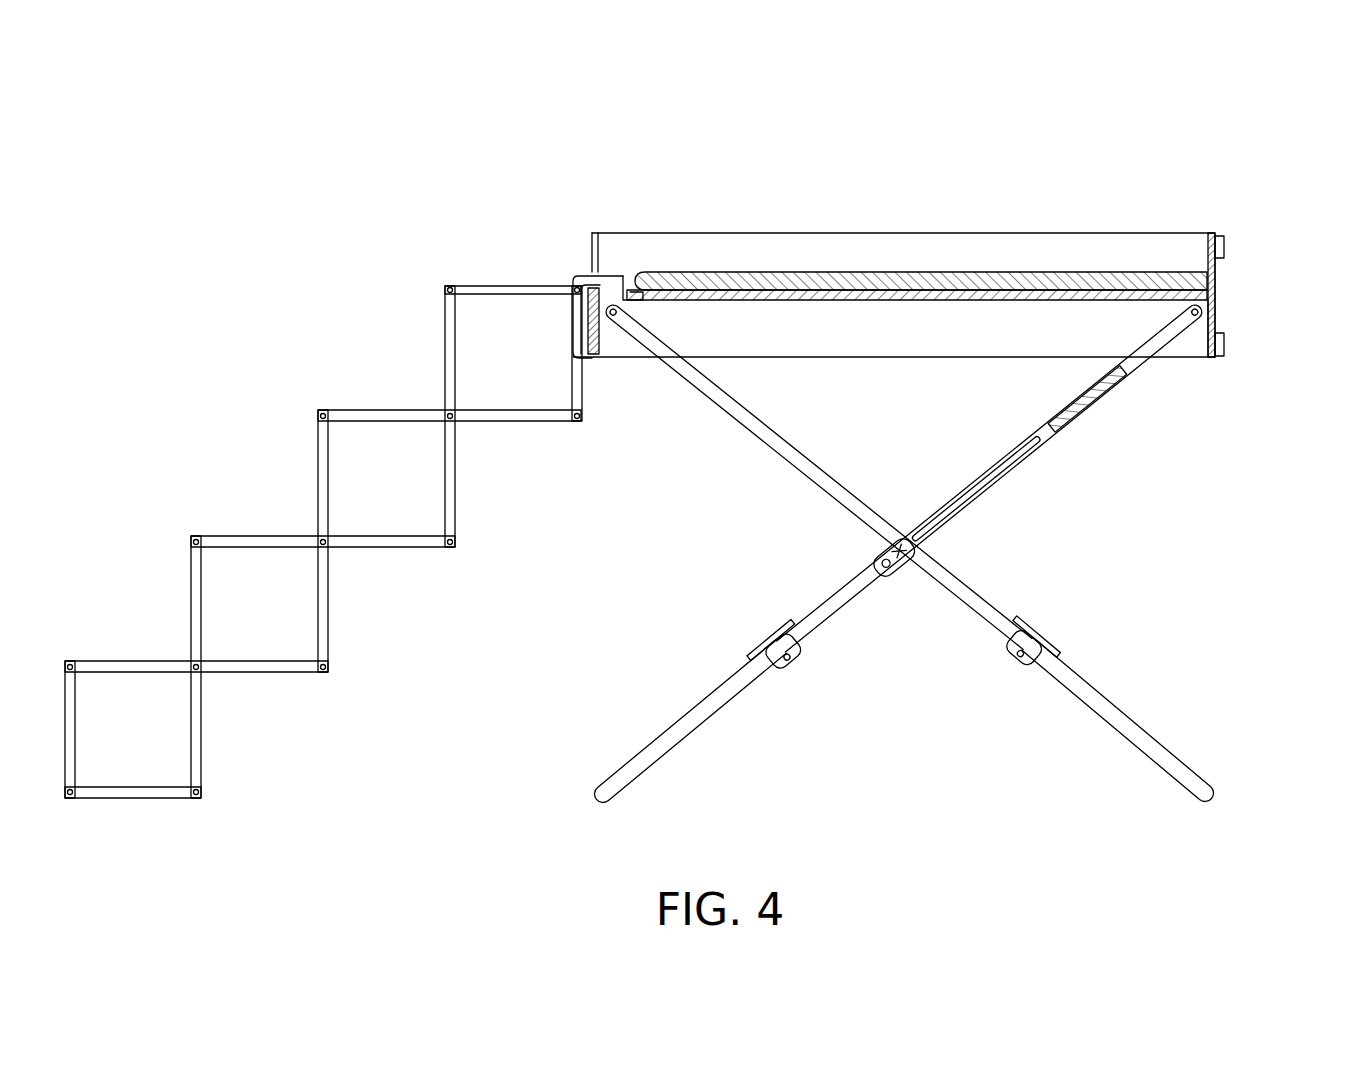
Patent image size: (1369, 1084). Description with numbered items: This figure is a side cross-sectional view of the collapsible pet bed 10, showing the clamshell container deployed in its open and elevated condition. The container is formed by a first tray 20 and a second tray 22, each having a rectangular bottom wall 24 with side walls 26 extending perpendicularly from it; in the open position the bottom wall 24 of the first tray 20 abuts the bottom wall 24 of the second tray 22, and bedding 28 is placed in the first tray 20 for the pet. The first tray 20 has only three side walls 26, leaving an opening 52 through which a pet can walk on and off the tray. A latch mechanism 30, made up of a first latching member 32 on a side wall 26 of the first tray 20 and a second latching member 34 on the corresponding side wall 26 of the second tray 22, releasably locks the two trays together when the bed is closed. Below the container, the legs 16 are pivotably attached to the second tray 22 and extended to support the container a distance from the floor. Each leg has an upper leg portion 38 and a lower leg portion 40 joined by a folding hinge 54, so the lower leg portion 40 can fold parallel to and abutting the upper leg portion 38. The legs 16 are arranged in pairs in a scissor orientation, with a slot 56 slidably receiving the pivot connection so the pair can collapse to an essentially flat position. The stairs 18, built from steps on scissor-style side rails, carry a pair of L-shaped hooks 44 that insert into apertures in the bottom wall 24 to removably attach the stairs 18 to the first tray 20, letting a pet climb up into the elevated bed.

The collapsible pet bed 10 is at (379, 190).
The legs 16 is at (878, 680).
The stairs 18 is at (228, 402).
The first tray 20 is at (1094, 220).
The second tray 22 is at (1176, 372).
The bottom wall 24 is at (1000, 290).
The side walls 26 is at (906, 244).
The bedding 28 is at (820, 272).
The latch mechanism 30 is at (1242, 290).
The first latching member 32 is at (1240, 240).
The second latching member 34 is at (1226, 345).
The upper leg portion 38 is at (822, 478).
The lower leg portion 40 is at (690, 716).
The hooks 44 is at (626, 268).
The opening 52 is at (616, 258).
The folding hinge 54 is at (782, 644).
The slot 56 is at (974, 492).